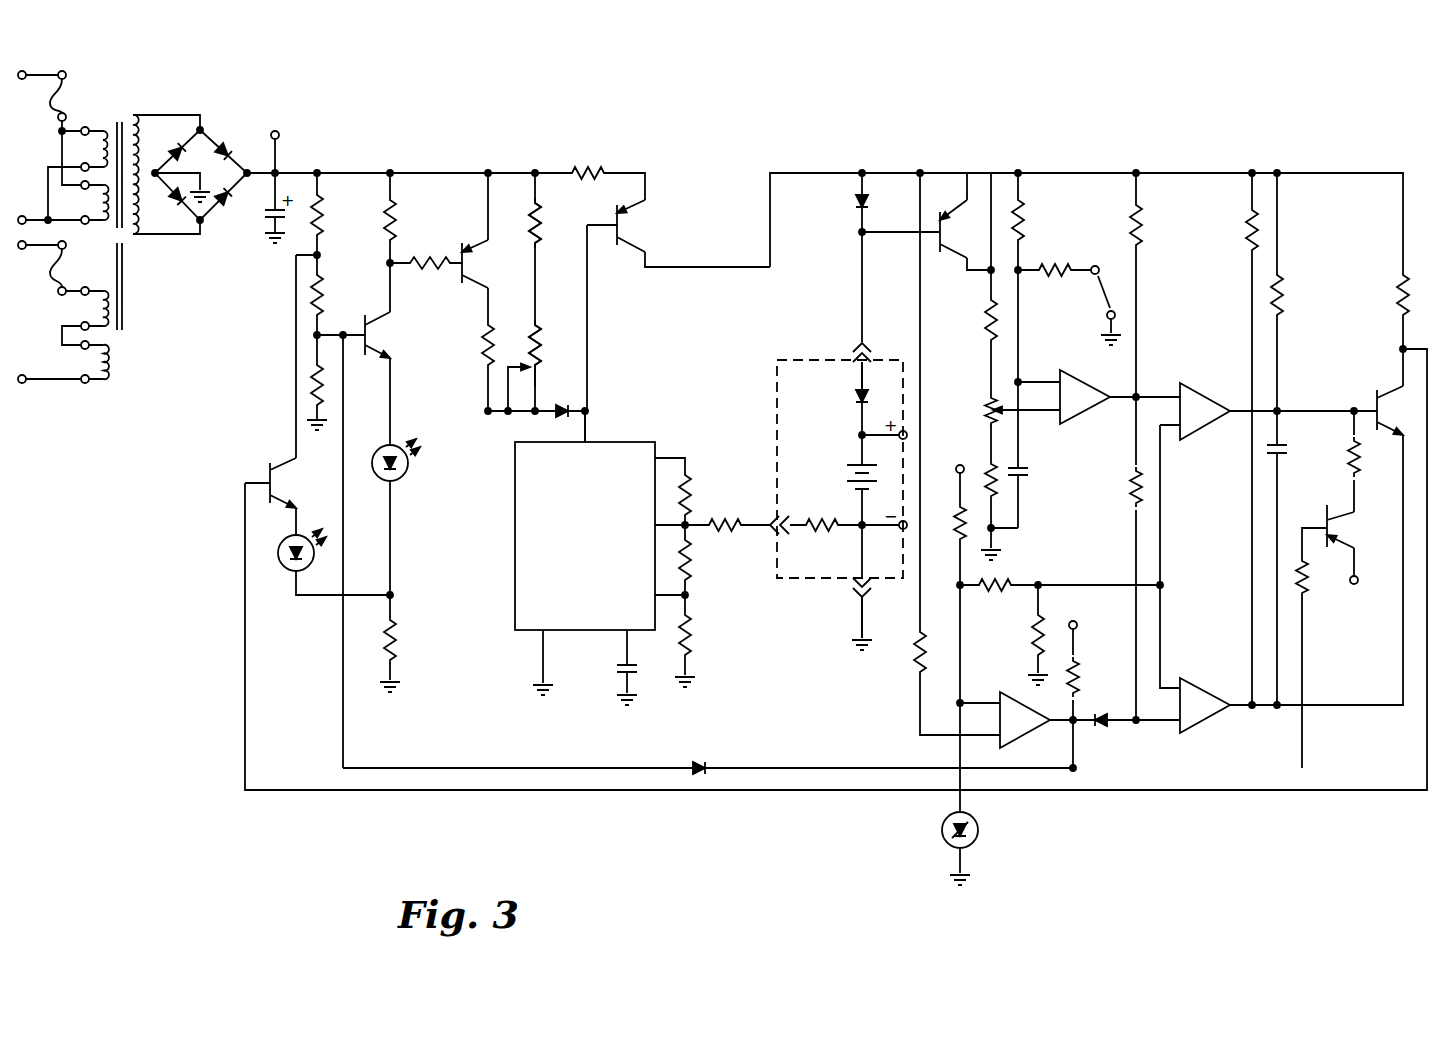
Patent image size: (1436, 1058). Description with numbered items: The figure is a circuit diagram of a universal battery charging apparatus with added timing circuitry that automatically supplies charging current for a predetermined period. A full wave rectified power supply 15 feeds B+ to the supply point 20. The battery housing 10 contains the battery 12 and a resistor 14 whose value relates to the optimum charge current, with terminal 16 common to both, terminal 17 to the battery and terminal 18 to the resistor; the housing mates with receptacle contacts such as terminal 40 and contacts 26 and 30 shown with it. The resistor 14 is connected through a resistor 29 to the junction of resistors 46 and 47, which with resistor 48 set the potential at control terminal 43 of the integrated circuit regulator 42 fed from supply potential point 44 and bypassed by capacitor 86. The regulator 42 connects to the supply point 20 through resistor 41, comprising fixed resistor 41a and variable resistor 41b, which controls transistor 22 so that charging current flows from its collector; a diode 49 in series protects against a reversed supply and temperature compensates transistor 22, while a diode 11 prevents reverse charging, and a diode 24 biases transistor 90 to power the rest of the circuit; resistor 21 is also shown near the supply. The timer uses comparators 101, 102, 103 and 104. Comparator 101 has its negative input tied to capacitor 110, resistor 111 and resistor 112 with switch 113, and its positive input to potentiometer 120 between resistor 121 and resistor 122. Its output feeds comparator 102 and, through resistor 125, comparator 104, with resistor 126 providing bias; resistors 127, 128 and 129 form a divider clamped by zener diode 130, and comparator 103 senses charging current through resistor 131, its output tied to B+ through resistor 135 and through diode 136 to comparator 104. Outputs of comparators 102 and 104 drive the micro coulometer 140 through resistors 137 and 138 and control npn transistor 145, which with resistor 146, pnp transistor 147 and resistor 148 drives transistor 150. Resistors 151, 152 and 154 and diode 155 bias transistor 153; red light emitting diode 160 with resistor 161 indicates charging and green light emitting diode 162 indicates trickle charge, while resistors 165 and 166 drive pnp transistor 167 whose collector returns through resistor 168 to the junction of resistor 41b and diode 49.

The battery housing 10 is at (777, 406).
The diode 11 is at (855, 396).
The battery 12 is at (850, 465).
The resistor 14 is at (818, 532).
The full wave rectified power supply 15 is at (240, 109).
The terminal 16 is at (865, 579).
The terminal 17 is at (865, 373).
The terminal 18 is at (790, 518).
The supply point 20 is at (280, 172).
The resistor 21 is at (600, 172).
The transistor 22 is at (647, 218).
The diode 24 is at (856, 204).
The charging contact 26 is at (868, 352).
The resistor 29 is at (732, 532).
The contact 30 is at (856, 590).
The terminal 40 is at (770, 518).
The resistor 41 is at (547, 264).
The fixed resistor 41a is at (542, 234).
The variable resistor 41b is at (542, 352).
The integrated circuit regulator 42 is at (515, 503).
The control terminal 43 is at (660, 601).
The supply potential point 44 is at (586, 442).
The resistor 46 is at (690, 482).
The resistor 47 is at (690, 560).
The resistor 48 is at (690, 628).
The diode 49 is at (561, 404).
The capacitor 86 is at (618, 672).
The transistor 90 is at (953, 260).
The comparator 101 is at (1086, 384).
The comparator 102 is at (1196, 392).
The comparator 103 is at (1034, 735).
The comparator 104 is at (1205, 686).
The capacitor 110 is at (1025, 478).
The resistor 111 is at (1024, 214).
The resistor 112 is at (1058, 265).
The single pole switch 113 is at (1098, 290).
The potentiometer 120 is at (990, 408).
The resistor 121 is at (998, 484).
The resistor 122 is at (985, 318).
The resistor 125 is at (1130, 495).
The resistor 126 is at (1144, 220).
The resistor 127 is at (1030, 631).
The resistor 128 is at (1010, 584).
The resistor 129 is at (958, 504).
The zener diode 130 is at (979, 832).
The resistor 131 is at (913, 656).
The resistor 135 is at (1080, 672).
The diode 136 is at (1102, 728).
The resistor 137 is at (1285, 280).
The resistor 138 is at (1246, 244).
The micro coulometer 140 is at (1282, 446).
The npn transistor 145 is at (1392, 392).
The resistor 146 is at (1348, 459).
The pnp transistor 147 is at (1340, 522).
The resistor 148 is at (1398, 296).
The npn transistor 150 is at (280, 481).
The resistor 151 is at (332, 202).
The resistor 152 is at (326, 294).
The npn transistor 153 is at (380, 332).
The resistor 154 is at (309, 386).
The diode 155 is at (708, 766).
The light emitting diode 160 is at (284, 562).
The resistor 161 is at (398, 625).
The light emitting diode 162 is at (404, 468).
The resistor 165 is at (400, 216).
The resistor 166 is at (433, 272).
The pnp transistor 167 is at (477, 263).
The resistor 168 is at (481, 340).